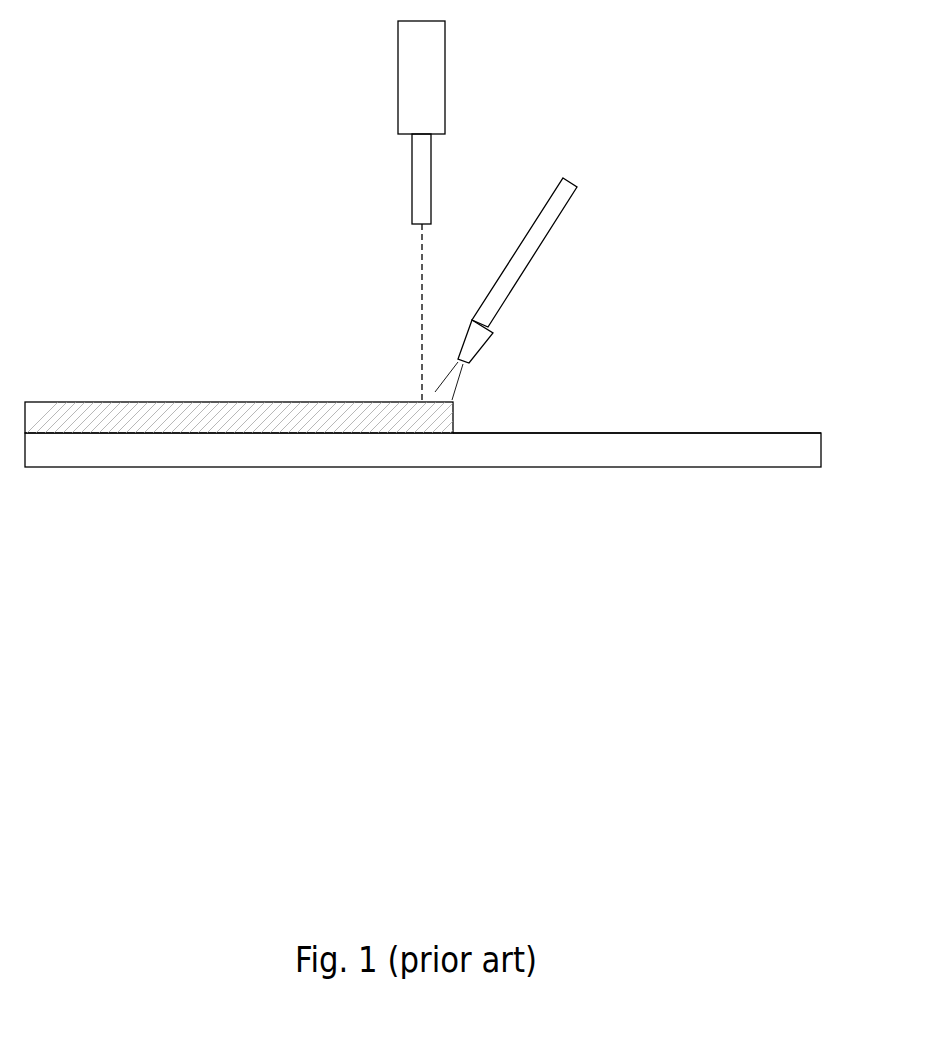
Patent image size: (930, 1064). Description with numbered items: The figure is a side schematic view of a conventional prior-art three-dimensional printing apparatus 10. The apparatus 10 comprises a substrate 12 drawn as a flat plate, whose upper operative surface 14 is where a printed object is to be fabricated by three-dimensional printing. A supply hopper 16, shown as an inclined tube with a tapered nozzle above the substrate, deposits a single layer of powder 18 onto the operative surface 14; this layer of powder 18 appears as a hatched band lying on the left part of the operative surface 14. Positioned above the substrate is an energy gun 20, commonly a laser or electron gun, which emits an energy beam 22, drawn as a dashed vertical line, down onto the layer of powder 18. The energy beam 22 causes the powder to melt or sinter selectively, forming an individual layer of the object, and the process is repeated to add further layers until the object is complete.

The 3D printing apparatus 10 is at (168, 100).
The substrate 12 is at (407, 452).
The operative surface 14 is at (655, 433).
The supply hopper 16 is at (520, 268).
The layer of powder 18 is at (240, 398).
The energy gun 20 is at (423, 79).
The energy beam 22 is at (420, 293).